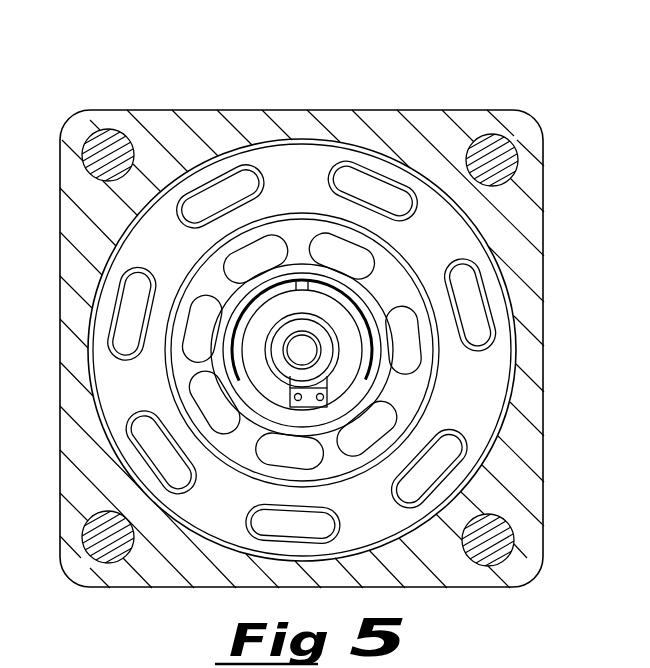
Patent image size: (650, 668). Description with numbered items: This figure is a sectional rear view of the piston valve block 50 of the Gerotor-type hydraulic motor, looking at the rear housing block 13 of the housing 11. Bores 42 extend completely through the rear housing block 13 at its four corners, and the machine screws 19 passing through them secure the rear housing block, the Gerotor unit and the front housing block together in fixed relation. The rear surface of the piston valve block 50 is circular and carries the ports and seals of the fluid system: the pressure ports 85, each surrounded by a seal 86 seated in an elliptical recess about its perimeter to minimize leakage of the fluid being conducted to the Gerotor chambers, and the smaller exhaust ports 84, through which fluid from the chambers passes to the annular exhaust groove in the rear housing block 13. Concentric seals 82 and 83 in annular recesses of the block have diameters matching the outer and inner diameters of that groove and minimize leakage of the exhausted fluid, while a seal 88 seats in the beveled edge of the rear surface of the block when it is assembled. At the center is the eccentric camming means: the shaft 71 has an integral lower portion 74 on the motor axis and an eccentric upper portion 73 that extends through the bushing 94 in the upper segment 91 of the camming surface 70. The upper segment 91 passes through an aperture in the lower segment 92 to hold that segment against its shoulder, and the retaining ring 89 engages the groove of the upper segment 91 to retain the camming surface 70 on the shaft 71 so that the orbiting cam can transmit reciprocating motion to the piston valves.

The housing 11 is at (517, 97).
The rear housing block 13 is at (444, 148).
The machine screws 19 is at (93, 143).
The bores 42 is at (86, 151).
The piston valve block 50 is at (304, 170).
The camming surface 70 is at (265, 296).
The shaft 71 is at (277, 323).
The upper portion 73 is at (328, 358).
The lower portion 74 is at (292, 356).
The seal 82 is at (390, 245).
The seal 83 is at (363, 290).
The exhaust ports 84 is at (310, 243).
The pressure ports 85 is at (236, 185).
The seal 86 is at (256, 167).
The seal 88 is at (515, 342).
The retaining ring 89 is at (300, 408).
The upper segment 91 is at (340, 374).
The lower segment 92 is at (363, 347).
The bushing 94 is at (338, 375).